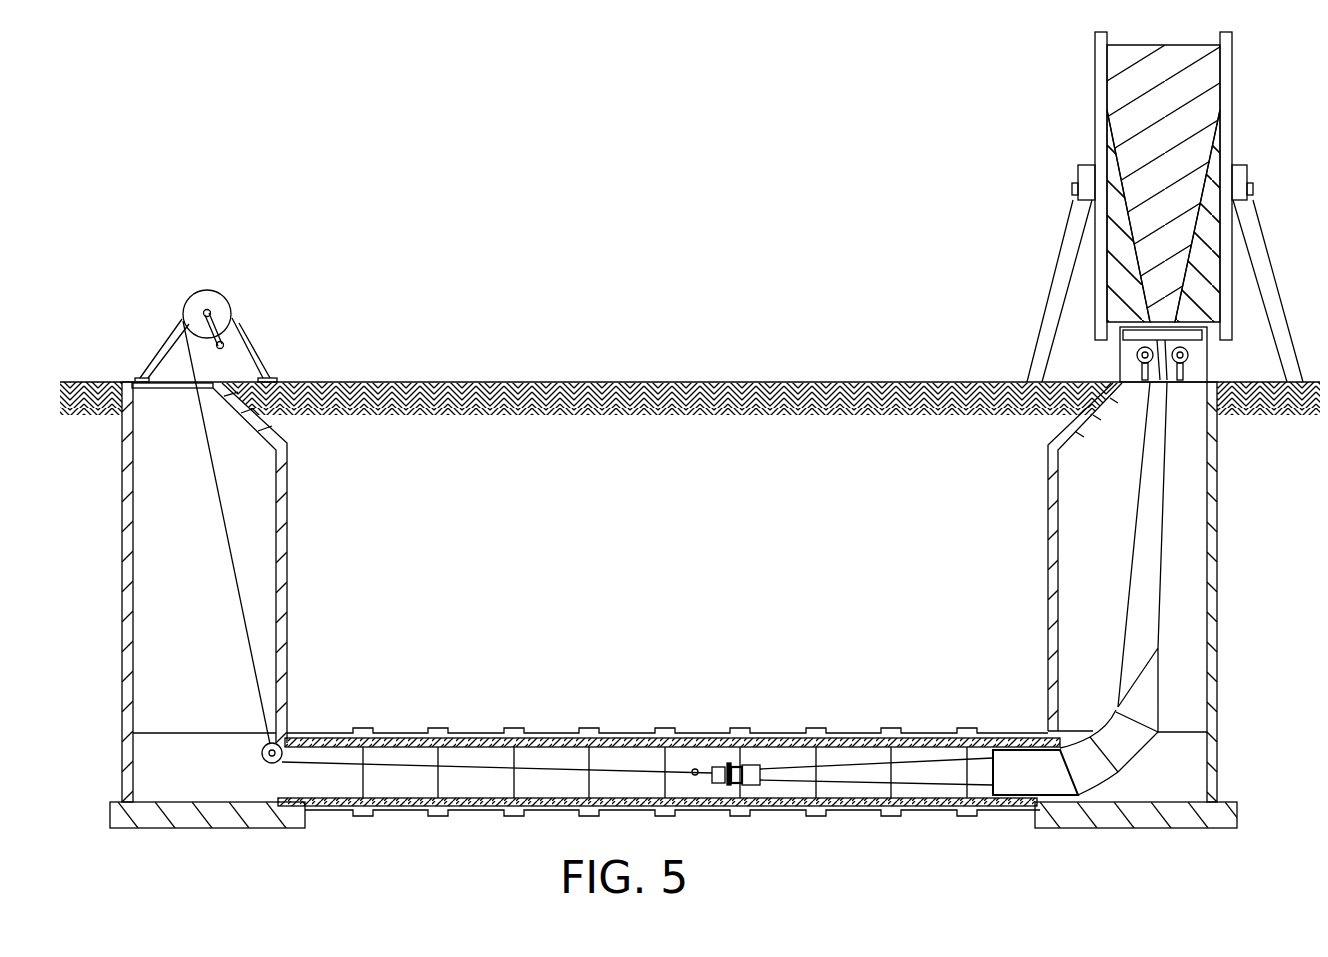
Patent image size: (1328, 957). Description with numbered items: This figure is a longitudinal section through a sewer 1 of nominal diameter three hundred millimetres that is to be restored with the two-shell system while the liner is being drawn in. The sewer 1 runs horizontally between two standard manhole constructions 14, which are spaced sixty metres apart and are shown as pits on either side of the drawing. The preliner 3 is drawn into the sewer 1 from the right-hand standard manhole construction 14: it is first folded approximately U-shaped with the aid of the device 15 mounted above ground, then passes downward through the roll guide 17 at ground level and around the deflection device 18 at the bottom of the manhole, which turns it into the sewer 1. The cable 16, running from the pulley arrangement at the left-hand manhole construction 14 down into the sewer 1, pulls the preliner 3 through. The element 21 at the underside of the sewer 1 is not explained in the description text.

The sewer 1 is at (614, 809).
The preliner 3 is at (1150, 567).
The standard manhole construction 14 is at (262, 522).
The device 15 is at (1222, 110).
The cable 16 is at (232, 602).
The roll guide 17 is at (1197, 360).
The deflection device 18 is at (1150, 692).
The conveyor trough 21 is at (405, 792).